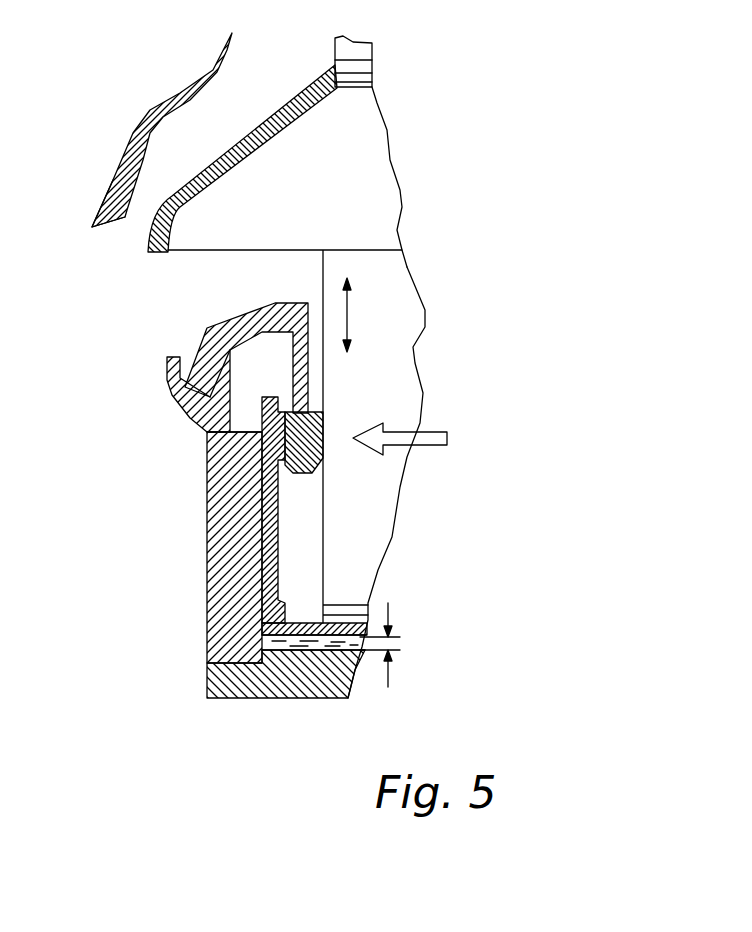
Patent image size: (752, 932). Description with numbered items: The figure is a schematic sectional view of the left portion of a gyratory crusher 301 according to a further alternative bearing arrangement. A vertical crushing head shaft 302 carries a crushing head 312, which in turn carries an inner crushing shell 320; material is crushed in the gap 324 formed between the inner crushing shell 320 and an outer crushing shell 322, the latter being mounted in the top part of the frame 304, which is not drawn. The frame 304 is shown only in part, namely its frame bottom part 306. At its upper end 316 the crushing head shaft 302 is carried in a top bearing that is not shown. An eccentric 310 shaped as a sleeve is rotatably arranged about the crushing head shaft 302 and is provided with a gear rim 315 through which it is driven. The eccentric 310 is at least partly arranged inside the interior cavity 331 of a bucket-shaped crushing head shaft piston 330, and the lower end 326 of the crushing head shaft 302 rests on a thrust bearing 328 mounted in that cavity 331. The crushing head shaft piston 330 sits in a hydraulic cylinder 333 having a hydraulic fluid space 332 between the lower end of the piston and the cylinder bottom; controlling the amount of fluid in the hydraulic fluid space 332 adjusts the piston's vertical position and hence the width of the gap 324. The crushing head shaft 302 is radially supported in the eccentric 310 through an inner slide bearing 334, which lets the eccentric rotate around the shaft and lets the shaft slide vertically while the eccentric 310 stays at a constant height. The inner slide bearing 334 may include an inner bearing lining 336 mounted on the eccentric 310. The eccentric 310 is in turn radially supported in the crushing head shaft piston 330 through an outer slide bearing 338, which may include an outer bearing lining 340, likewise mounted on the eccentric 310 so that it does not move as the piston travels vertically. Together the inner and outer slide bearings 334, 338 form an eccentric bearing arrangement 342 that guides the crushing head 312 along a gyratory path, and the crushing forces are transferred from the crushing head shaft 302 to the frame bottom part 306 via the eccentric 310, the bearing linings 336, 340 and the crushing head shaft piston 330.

The gyratory crusher 301 is at (543, 182).
The crushing head shaft 302 is at (388, 288).
The frame 304 is at (204, 642).
The frame bottom part 306 is at (215, 603).
The eccentric 310 is at (228, 318).
The crushing head 312 is at (368, 163).
The gear rim 315 is at (202, 340).
The upper end 316 is at (340, 48).
The inner crushing shell 320 is at (243, 140).
The outer crushing shell 322 is at (127, 163).
The gap 324 is at (180, 147).
The lower end 326 is at (358, 563).
The thrust bearing 328 is at (343, 618).
The crushing head shaft piston 330 is at (268, 518).
The interior cavity 331 is at (298, 545).
The hydraulic fluid space 332 is at (293, 643).
The hydraulic cylinder 333 is at (227, 578).
The inner slide bearing 334 is at (328, 410).
The inner bearing lining 336 is at (320, 430).
The outer slide bearing 338 is at (284, 472).
The outer bearing lining 340 is at (205, 433).
The eccentric bearing arrangement 342 is at (332, 457).